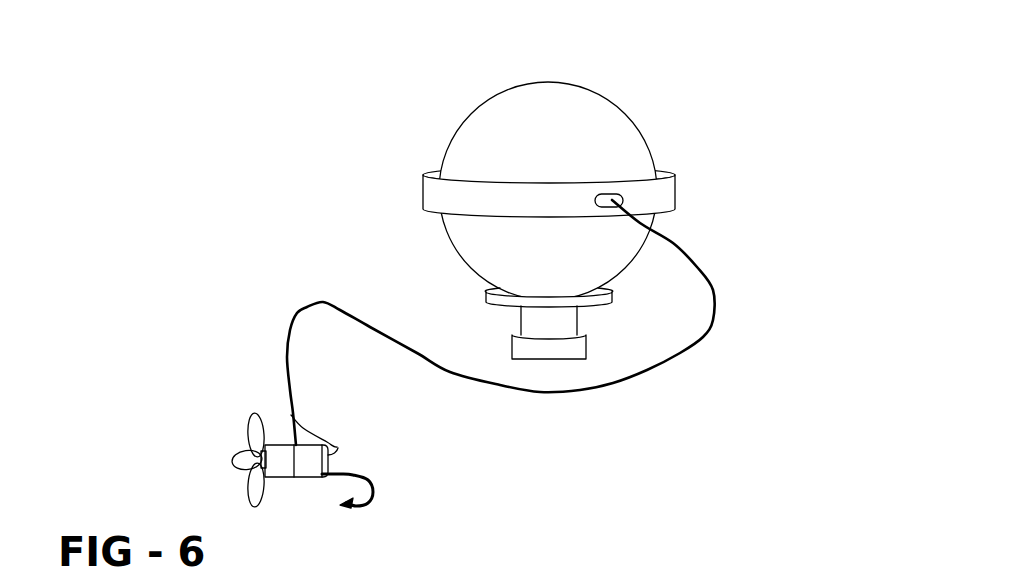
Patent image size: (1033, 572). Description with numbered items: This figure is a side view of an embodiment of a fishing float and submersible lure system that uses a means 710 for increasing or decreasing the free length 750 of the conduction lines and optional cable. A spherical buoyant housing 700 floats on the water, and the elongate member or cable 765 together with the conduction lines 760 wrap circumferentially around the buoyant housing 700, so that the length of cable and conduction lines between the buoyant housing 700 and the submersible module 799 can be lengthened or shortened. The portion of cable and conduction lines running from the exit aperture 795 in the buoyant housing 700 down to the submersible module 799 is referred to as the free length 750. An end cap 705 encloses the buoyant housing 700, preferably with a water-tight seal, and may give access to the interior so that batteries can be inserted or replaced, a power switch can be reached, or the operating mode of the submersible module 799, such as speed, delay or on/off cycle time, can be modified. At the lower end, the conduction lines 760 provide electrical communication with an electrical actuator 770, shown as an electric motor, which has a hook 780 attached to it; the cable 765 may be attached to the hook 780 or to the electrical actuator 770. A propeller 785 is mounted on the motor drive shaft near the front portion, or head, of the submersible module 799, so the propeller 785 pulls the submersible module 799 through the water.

The buoyant housing 700 is at (620, 128).
The means for increasing/decreasing the free length 710 is at (612, 159).
The exit aperture 795 is at (623, 195).
The end cap 705 is at (518, 347).
The free length 750 is at (707, 277).
The conduction lines 760 is at (337, 447).
The cable 765 is at (280, 450).
The electrical actuator 770 is at (179, 425).
The propeller 785 is at (233, 457).
The hook 780 is at (377, 487).
The submersible module 799 is at (350, 458).